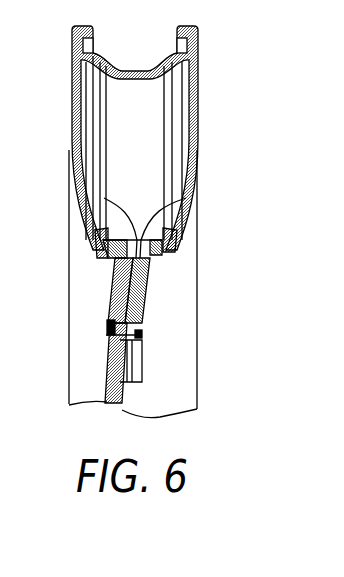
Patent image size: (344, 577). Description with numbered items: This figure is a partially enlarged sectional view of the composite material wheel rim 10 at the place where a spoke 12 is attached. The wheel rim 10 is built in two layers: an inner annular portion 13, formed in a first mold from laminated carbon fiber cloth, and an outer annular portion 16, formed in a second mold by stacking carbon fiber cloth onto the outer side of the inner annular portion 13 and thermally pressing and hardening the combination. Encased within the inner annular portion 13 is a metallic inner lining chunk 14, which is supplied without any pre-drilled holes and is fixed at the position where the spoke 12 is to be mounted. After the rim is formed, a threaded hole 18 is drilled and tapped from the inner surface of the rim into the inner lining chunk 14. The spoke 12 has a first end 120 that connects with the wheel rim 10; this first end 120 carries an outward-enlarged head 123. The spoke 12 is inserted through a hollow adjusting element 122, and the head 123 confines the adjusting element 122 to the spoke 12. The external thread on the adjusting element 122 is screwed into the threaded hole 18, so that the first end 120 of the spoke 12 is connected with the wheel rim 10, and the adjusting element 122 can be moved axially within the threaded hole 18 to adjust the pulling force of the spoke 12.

The wheel rim 10 is at (160, 362).
The spoke 12 is at (107, 388).
The inner annular portion 13 is at (177, 233).
The inner lining chunk 14 is at (110, 251).
The outer annular portion 16 is at (198, 103).
The threaded hole 18 is at (184, 199).
The first end 120 is at (108, 313).
The adjusting element 122 is at (140, 298).
The head 123 is at (106, 199).